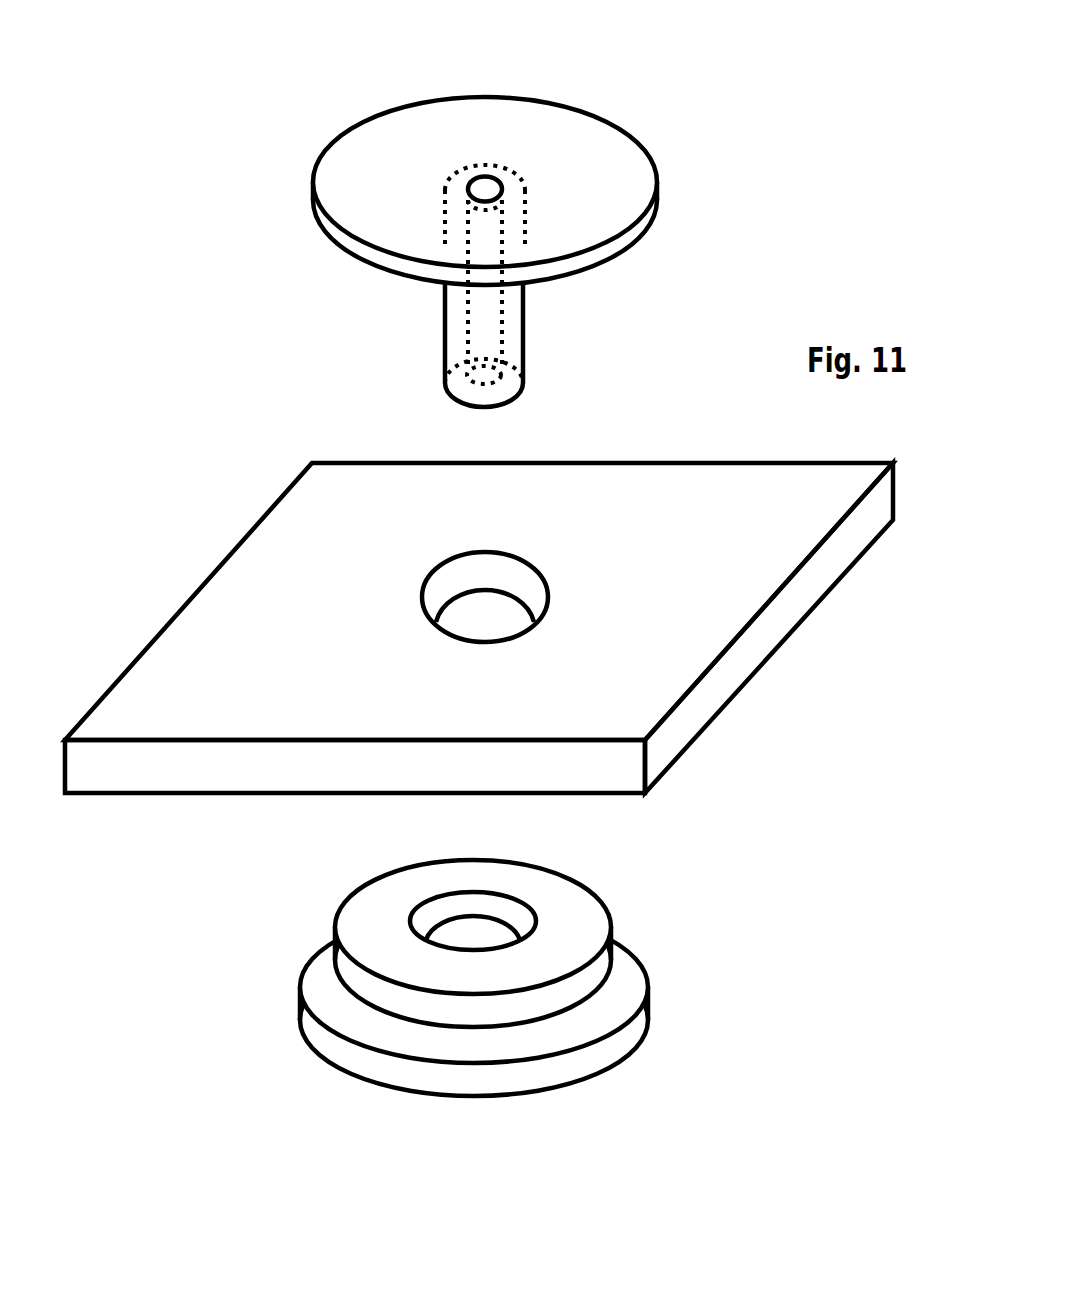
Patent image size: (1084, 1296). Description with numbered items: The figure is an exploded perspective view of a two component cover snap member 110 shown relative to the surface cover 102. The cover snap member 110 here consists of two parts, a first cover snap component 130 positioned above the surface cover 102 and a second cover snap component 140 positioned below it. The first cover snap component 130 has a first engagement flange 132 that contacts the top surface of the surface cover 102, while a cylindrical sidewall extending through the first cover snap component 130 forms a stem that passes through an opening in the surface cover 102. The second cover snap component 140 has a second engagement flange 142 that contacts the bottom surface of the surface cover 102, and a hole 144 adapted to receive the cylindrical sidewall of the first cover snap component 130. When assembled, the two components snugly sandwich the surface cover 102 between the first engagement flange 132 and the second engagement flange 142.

The cover snap member 110 is at (280, 198).
The first cover snap component 130 is at (600, 77).
The first engagement flange 132 is at (557, 143).
The surface cover 102 is at (767, 553).
The second cover snap component 140 is at (622, 852).
The second engagement flange 142 is at (370, 950).
The hole 144 is at (447, 938).